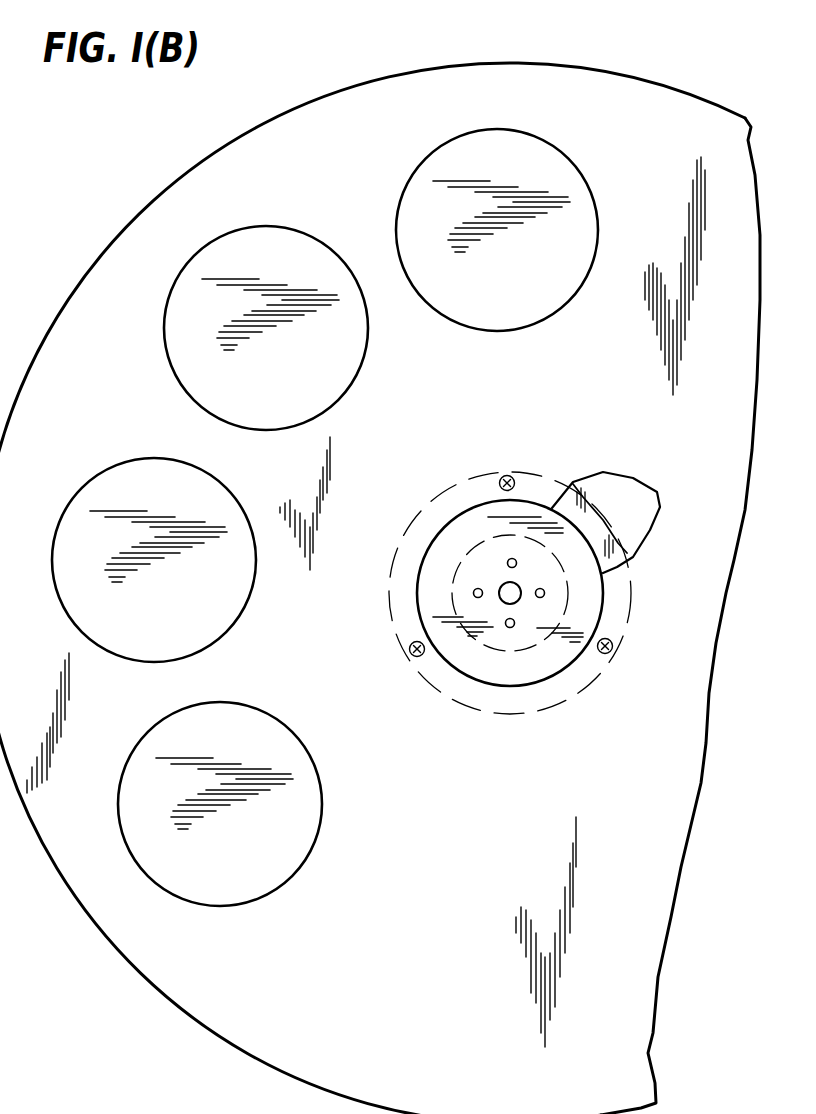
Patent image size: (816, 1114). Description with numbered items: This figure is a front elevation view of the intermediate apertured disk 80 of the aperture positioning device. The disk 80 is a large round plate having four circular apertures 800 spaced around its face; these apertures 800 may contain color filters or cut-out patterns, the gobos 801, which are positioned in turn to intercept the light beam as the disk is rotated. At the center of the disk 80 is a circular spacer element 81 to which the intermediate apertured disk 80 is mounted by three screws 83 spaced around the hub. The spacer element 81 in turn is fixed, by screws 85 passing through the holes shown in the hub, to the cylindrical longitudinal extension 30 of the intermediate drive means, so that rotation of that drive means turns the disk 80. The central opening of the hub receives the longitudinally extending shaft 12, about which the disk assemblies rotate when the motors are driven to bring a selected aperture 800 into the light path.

The intermediate apertured disk 80 is at (367, 79).
The apertures 800 is at (587, 178).
The cut-out patterns (gobos) 801 is at (527, 298).
The spacer element 81 is at (592, 588).
The screws 83 is at (512, 480).
The screws 85 is at (476, 598).
The longitudinally extending shaft 12 is at (503, 587).
The cylindrical longitudinal extension 30 is at (527, 660).